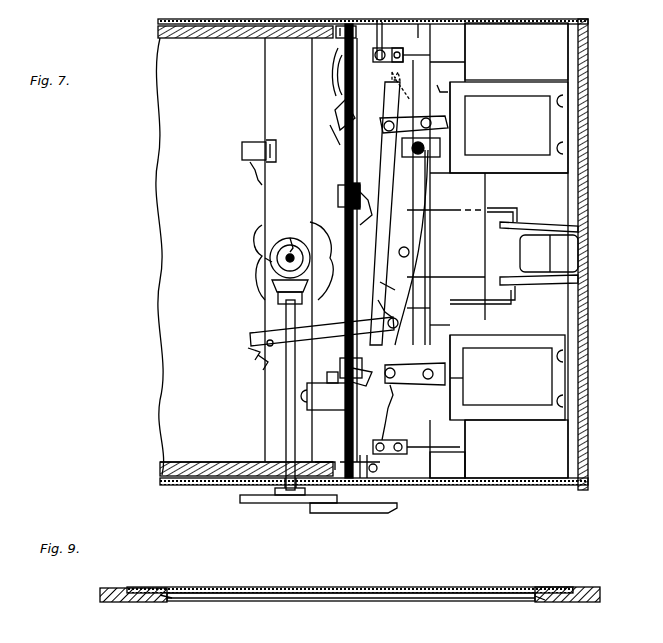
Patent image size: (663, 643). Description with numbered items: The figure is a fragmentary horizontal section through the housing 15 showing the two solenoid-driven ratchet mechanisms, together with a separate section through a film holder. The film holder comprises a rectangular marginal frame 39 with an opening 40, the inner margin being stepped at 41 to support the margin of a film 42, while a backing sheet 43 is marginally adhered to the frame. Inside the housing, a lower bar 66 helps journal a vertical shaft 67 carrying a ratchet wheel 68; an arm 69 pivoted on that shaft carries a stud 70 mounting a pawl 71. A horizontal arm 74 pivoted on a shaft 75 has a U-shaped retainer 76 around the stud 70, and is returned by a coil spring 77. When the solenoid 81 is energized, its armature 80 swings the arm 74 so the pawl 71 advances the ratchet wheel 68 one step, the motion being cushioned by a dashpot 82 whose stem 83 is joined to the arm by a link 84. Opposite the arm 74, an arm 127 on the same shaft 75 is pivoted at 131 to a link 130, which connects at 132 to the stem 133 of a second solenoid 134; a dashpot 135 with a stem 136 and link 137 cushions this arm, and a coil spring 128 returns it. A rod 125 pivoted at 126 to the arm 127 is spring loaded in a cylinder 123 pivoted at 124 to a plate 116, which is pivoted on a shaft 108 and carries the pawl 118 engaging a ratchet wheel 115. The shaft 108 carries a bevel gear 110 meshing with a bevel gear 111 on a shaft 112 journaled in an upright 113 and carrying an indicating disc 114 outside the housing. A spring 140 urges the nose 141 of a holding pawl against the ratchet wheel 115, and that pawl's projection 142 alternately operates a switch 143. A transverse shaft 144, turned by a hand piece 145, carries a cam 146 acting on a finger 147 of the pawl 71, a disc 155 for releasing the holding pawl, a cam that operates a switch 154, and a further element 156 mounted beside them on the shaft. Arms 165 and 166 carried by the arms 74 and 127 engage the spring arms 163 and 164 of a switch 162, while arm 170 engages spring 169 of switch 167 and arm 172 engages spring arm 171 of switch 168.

In FIG. 7, the housing 15 is at (588, 186).
In FIG. 7, the coil spring 77 is at (190, 38).
In FIG. 7, the coil spring 128 is at (200, 462).
In FIG. 7, the shaft 144 is at (345, 156).
In FIG. 7, the dashpot 82 is at (527, 61).
In FIG. 7, the solenoid 81 is at (535, 140).
In FIG. 7, the armature 80 is at (440, 124).
In FIG. 7, the vertical shaft 67 is at (440, 146).
In FIG. 7, the spring 169 is at (447, 189).
In FIG. 7, the switch 167 is at (480, 238).
In FIG. 7, the switch 168 is at (478, 326).
In FIG. 7, the arm 165 is at (498, 208).
In FIG. 7, the spring arm 163 is at (530, 226).
In FIG. 7, the switch 162 is at (570, 256).
In FIG. 7, the spring 164 is at (530, 285).
In FIG. 7, the arm 166 is at (504, 304).
In FIG. 7, the solenoid 134 is at (530, 395).
In FIG. 7, the stem 133 is at (463, 378).
In FIG. 7, the dashpot 135 is at (528, 460).
In FIG. 7, the stem 136 is at (447, 465).
In FIG. 7, the cam 146 is at (352, 9).
In FIG. 7, the horizontal arm 74 is at (375, 28).
In FIG. 7, the lower bar 66 is at (418, 36).
In FIG. 7, the link 84 is at (377, 48).
In FIG. 7, the stem 83 is at (430, 55).
In FIG. 7, the ratchet wheel 68 is at (445, 78).
In FIG. 7, the arm 69 is at (400, 114).
In FIG. 7, the finger 147 is at (338, 64).
In FIG. 7, the U-shaped retainer 76 is at (342, 79).
In FIG. 7, the vertical stud 70 is at (340, 104).
In FIG. 7, the pawl 71 is at (330, 135).
In FIG. 7, the block 156 is at (325, 220).
In FIG. 7, the disc 155 is at (373, 207).
In FIG. 7, the arm 170 is at (398, 170).
In FIG. 7, the shaft 75 is at (399, 252).
In FIG. 7, the spring arm 171 is at (420, 202).
In FIG. 7, the arm 172 is at (420, 328).
In FIG. 7, the switch 143 is at (250, 150).
In FIG. 7, the projection 142 is at (258, 183).
In FIG. 7, the shaft 108 is at (290, 248).
In FIG. 7, the bevel gear 110 is at (262, 242).
In FIG. 7, the ratchet wheel 115 is at (262, 262).
In FIG. 7, the pawl 118 is at (326, 272).
In FIG. 7, the bevel gear 111 is at (275, 288).
In FIG. 7, the upright 113 is at (278, 300).
In FIG. 7, the plate 116 is at (250, 338).
In FIG. 7, the rod 125 is at (388, 323).
In FIG. 7, the pivot 126 is at (376, 304).
In FIG. 7, the arm 127 is at (377, 278).
In FIG. 7, the cylinder 123 is at (250, 352).
In FIG. 7, the pivot 124 is at (262, 365).
In FIG. 7, the shaft 112 is at (286, 404).
In FIG. 7, the switch 154 is at (327, 400).
In FIG. 7, the nose 141 is at (340, 364).
In FIG. 7, the spring 140 is at (368, 378).
In FIG. 7, the link 130 is at (405, 371).
In FIG. 7, the pivot 132 is at (407, 396).
In FIG. 7, the pivot 131 is at (402, 424).
In FIG. 7, the link 137 is at (392, 440).
In FIG. 7, the hand piece 145 is at (392, 509).
In FIG. 7, the indicating disc 114 is at (255, 504).
In FIG. 9, the backing sheet 43 is at (262, 587).
In FIG. 9, the film 42 is at (328, 601).
In FIG. 9, the marginal frame 39 is at (122, 600).
In FIG. 9, the opening 40 is at (168, 600).
In FIG. 9, the step 41 is at (542, 602).